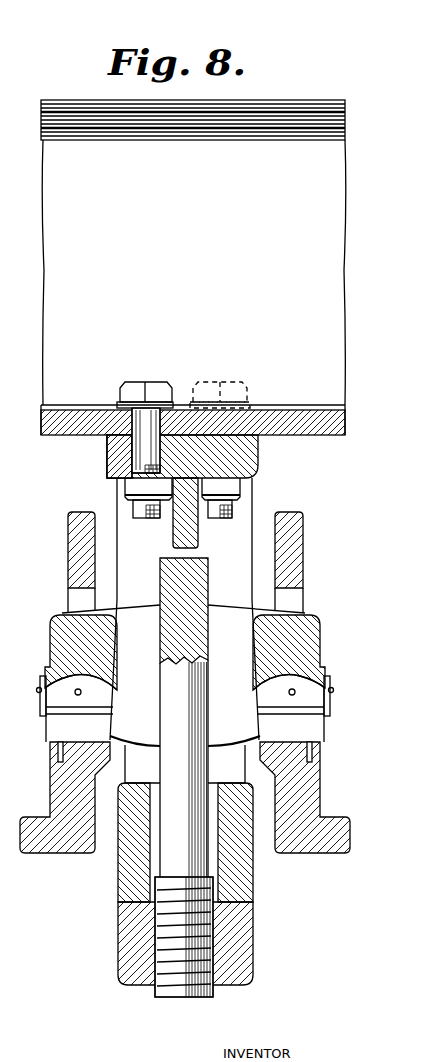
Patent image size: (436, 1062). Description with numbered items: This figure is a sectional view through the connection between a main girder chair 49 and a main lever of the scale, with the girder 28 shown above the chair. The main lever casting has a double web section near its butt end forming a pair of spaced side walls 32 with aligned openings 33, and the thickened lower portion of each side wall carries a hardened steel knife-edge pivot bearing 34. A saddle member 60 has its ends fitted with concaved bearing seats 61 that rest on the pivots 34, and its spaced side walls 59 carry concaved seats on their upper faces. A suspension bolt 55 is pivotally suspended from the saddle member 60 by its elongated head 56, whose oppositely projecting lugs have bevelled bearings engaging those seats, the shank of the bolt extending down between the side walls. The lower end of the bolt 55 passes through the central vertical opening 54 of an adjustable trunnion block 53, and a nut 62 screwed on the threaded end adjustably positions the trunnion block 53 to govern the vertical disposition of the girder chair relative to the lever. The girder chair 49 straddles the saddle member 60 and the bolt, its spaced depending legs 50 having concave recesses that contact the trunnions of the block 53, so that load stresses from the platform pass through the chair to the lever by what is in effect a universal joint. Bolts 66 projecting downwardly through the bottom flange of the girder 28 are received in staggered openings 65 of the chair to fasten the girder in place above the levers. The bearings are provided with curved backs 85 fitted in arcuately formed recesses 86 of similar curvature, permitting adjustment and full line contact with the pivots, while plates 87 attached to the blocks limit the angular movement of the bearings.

The cylinder 28 is at (193, 267).
The bolt 66 is at (158, 396).
The staggered opening 65 is at (112, 459).
The main girder chair 49 is at (252, 457).
The depending leg 50 is at (240, 508).
The side wall 32 is at (68, 541).
The opening 33 is at (80, 602).
The elongated head 56 is at (166, 559).
The side wall of saddle member 59 is at (204, 611).
The saddle member 60 is at (60, 638).
The curved back 85 is at (113, 690).
The arcuately formed recess 86 is at (45, 676).
The plate 87 is at (40, 691).
The concaved bearing seat 61 is at (58, 709).
The suspension bolt 55 is at (172, 722).
The knife-edge pivot bearing 34 is at (58, 730).
The adjustable trunnion block 53 is at (120, 874).
The central vertical opening 54 is at (213, 850).
The nut 62 is at (130, 944).